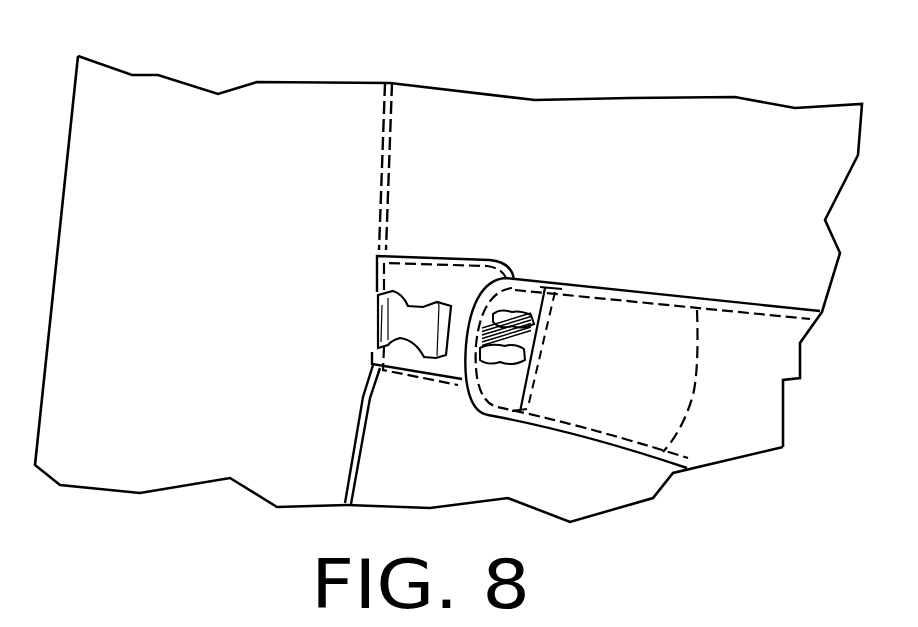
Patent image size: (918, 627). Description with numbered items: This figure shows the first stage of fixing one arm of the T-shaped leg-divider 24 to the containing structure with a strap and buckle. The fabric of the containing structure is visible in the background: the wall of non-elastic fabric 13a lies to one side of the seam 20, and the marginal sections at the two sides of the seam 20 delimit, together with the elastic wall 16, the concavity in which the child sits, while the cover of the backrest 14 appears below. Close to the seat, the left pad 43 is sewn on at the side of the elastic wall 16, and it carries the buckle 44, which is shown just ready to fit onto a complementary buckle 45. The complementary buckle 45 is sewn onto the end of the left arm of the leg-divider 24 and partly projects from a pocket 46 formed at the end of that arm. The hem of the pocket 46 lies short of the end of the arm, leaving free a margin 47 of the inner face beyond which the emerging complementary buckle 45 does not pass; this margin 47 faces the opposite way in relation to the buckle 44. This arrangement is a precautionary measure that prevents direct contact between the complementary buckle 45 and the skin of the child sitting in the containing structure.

The elastic wall 16 is at (641, 165).
The wall of non-elastic fabric 13a is at (195, 421).
The backrest 14 is at (570, 473).
The seam 20 is at (382, 124).
The left pad 43 is at (418, 283).
The buckle 44 is at (427, 322).
The complementary buckle 45 is at (530, 320).
The pocket 46 is at (586, 350).
The margin 47 is at (500, 382).
The leg-divider 24 is at (713, 405).